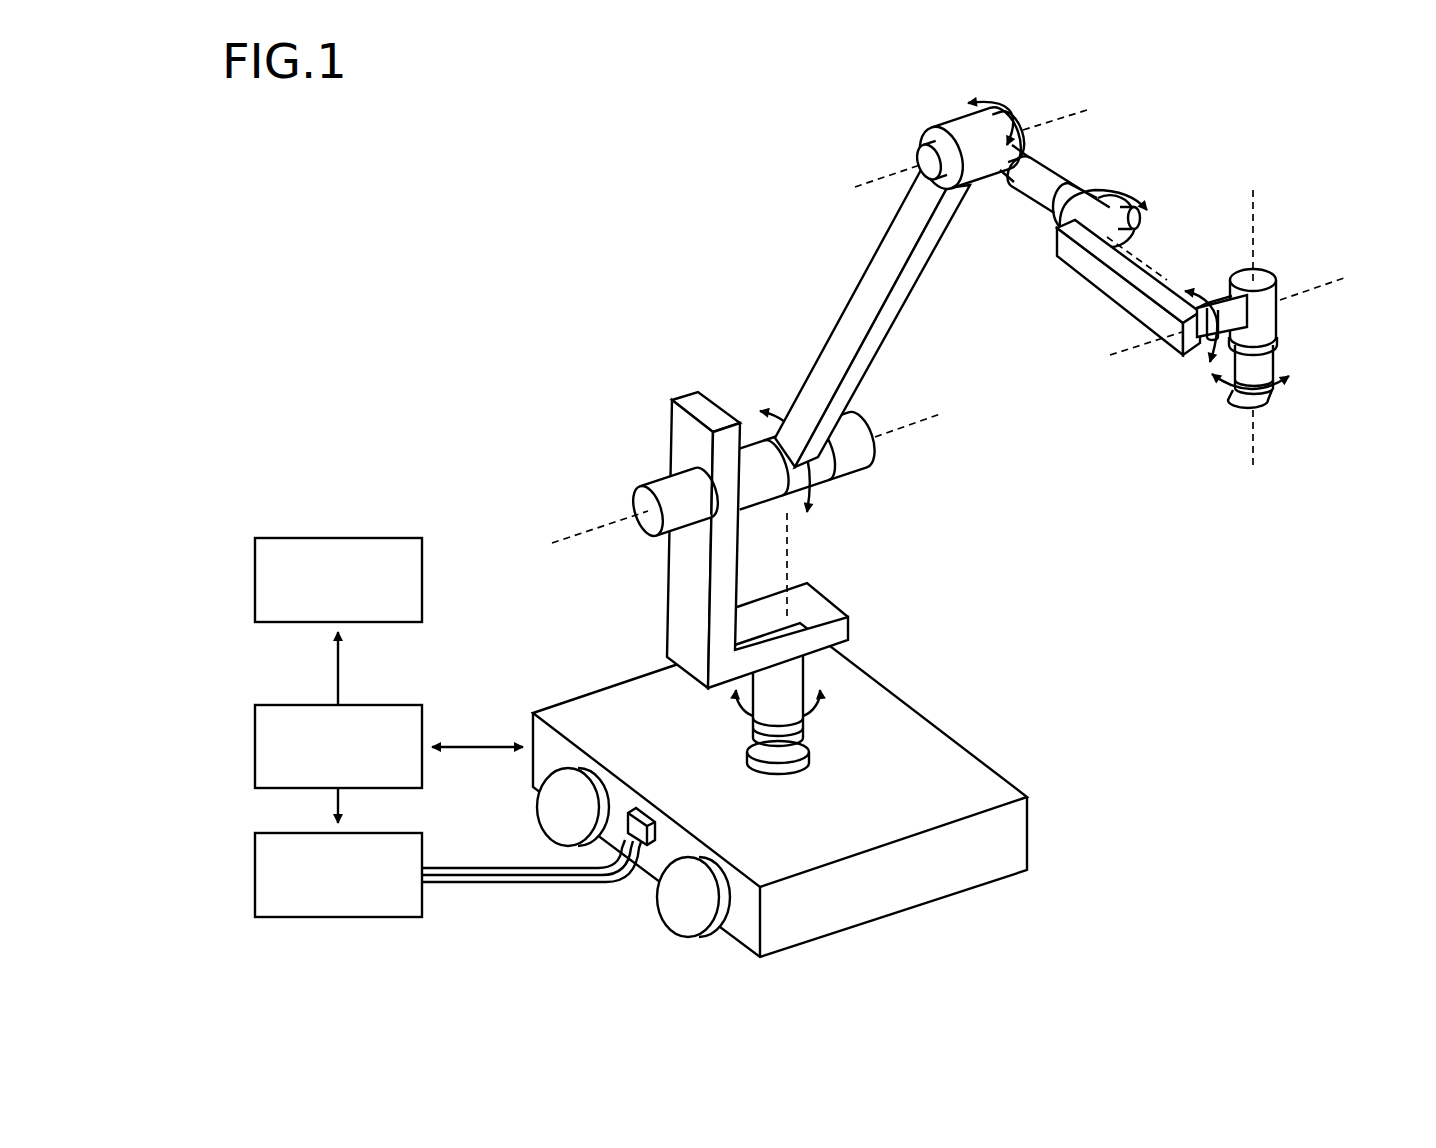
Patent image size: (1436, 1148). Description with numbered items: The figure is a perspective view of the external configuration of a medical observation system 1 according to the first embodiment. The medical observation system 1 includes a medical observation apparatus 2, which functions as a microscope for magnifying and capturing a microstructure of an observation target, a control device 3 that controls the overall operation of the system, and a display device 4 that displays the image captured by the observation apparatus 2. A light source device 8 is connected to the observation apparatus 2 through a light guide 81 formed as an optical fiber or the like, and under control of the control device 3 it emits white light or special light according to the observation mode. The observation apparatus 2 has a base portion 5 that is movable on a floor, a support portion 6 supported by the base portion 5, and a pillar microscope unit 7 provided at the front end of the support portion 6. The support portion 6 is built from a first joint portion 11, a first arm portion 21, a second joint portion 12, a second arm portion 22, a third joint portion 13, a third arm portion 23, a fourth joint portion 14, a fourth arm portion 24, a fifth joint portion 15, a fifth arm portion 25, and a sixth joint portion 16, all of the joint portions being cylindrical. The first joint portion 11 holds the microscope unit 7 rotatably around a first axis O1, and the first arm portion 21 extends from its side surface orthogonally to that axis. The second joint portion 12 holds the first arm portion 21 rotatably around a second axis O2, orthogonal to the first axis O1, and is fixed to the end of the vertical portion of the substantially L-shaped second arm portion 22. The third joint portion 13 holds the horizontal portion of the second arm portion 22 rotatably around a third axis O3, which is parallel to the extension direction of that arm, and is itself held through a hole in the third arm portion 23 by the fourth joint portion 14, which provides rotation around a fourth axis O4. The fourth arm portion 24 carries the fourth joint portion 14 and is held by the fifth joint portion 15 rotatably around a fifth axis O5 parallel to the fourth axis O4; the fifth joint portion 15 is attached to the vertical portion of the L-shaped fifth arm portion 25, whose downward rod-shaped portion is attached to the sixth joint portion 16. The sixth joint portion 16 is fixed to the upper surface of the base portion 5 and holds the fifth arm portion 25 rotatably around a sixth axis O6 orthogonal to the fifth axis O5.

The medical observation system 1 is at (574, 170).
The medical observation apparatus 2 is at (1121, 595).
The control device 3 is at (381, 683).
The display device 4 is at (381, 515).
The base portion 5 is at (1007, 838).
The support portion 6 is at (823, 345).
The microscope unit 7 is at (1275, 342).
The light source device 8 is at (381, 811).
The light guide 81 is at (467, 868).
The first joint portion 11 is at (1247, 277).
The second joint portion 12 is at (1200, 347).
The third joint portion 13 is at (1055, 213).
The fourth joint portion 14 is at (970, 122).
The fifth joint portion 15 is at (670, 489).
The sixth joint portion 16 is at (793, 735).
The first arm portion 21 is at (1222, 305).
The second arm portion 22 is at (1115, 292).
The third arm portion 23 is at (1040, 195).
The fourth arm portion 24 is at (890, 260).
The fifth arm portion 25 is at (680, 607).
The first axis O1 is at (1255, 212).
The second axis O2 is at (1138, 347).
The third axis O3 is at (1143, 262).
The fourth axis O4 is at (890, 170).
The fifth axis O5 is at (922, 422).
The sixth axis O6 is at (787, 538).